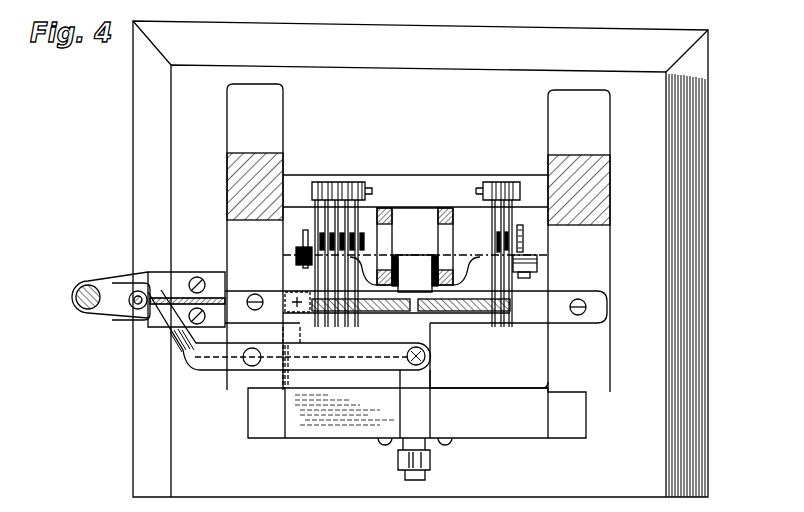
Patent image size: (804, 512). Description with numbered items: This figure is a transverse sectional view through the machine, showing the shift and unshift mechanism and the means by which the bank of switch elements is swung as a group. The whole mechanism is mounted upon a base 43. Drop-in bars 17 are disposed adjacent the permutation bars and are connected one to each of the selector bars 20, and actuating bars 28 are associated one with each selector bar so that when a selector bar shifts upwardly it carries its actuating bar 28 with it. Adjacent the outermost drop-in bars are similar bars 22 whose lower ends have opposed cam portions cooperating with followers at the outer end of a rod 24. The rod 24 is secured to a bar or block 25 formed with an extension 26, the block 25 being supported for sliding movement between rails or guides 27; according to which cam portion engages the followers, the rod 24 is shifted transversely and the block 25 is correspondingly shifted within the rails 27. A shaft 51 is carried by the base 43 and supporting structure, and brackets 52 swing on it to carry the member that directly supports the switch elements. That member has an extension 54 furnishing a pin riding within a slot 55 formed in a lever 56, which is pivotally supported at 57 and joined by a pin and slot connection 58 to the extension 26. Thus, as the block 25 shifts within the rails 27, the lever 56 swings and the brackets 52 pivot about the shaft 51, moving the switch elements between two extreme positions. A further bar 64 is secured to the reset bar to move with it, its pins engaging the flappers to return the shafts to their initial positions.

The drop-in bars 17 is at (513, 232).
The selector bars 20 is at (510, 298).
The bars 22 is at (303, 229).
The rod 24 is at (297, 258).
The bar 25 is at (422, 236).
The extension 26 is at (405, 406).
The rails 27 is at (383, 207).
The actuating bars 28 is at (478, 312).
The base 43 is at (638, 440).
The shaft 51 is at (76, 301).
The brackets 52 is at (100, 310).
The extension 54 is at (135, 306).
The slot 55 is at (139, 292).
The lever 56 is at (208, 362).
The pivot 57 is at (250, 362).
The pin and slot connection 58 is at (428, 360).
The bar 64 is at (413, 312).